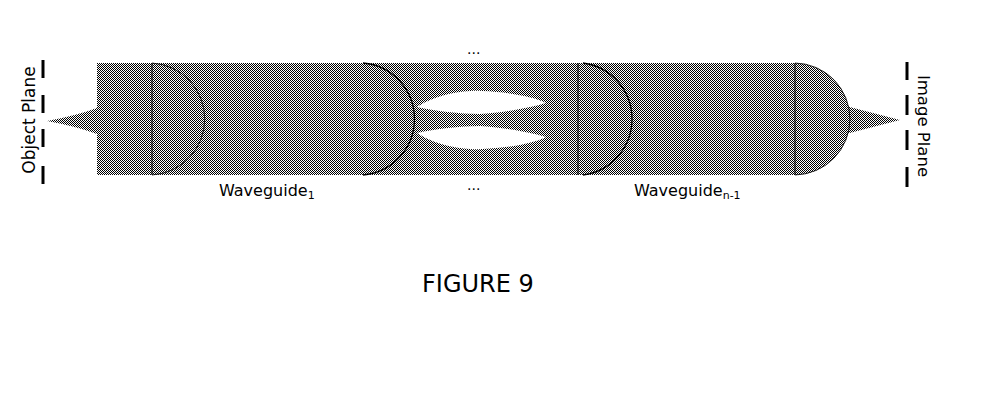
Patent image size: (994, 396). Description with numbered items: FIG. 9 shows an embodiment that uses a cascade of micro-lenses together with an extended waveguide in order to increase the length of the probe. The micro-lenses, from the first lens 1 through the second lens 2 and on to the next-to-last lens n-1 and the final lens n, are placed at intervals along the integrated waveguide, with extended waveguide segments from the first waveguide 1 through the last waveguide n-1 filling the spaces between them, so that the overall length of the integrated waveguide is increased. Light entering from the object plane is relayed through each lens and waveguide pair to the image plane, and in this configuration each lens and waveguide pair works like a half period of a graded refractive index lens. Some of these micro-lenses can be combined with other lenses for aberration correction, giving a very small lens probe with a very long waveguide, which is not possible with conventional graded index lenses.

The lens 1 / waveguide 1 is at (171, 108).
The lens 2 is at (382, 108).
The lens n-1 / waveguide n-1 is at (600, 108).
The lens n is at (822, 108).